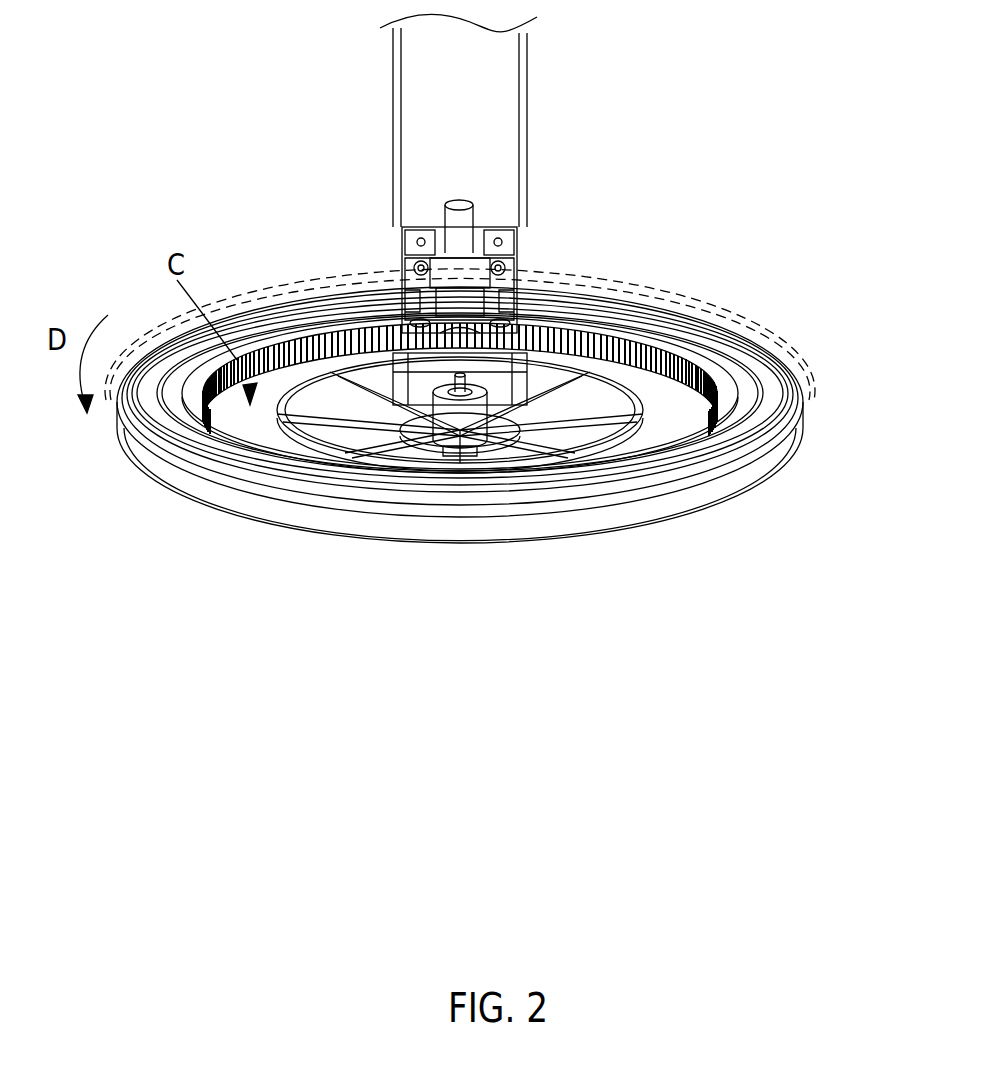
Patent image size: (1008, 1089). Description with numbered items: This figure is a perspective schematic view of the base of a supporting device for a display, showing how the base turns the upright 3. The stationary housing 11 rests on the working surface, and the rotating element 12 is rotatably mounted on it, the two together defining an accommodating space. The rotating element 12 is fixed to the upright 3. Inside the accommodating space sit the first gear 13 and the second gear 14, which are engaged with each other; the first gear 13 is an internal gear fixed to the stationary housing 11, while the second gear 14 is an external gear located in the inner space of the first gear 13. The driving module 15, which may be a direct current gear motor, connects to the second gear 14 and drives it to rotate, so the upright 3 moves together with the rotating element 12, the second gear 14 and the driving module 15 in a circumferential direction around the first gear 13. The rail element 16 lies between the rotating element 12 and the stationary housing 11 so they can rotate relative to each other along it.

The upright 3 is at (395, 93).
The stationary housing 11 is at (797, 450).
The rotating element 12 is at (780, 340).
The first gear 13 is at (647, 342).
The second gear 14 is at (542, 322).
The driving module 15 is at (473, 205).
The rail element 16 is at (630, 440).